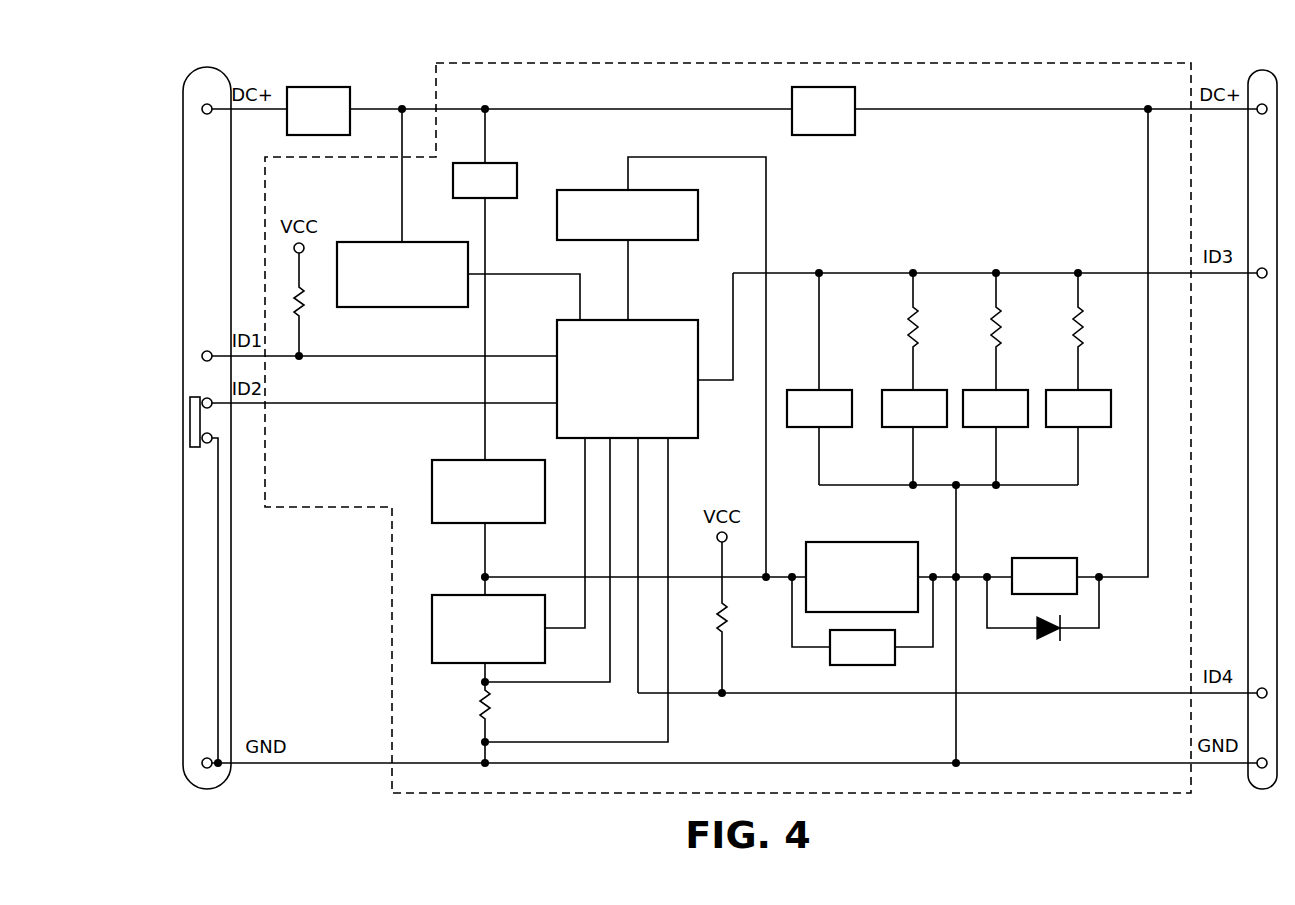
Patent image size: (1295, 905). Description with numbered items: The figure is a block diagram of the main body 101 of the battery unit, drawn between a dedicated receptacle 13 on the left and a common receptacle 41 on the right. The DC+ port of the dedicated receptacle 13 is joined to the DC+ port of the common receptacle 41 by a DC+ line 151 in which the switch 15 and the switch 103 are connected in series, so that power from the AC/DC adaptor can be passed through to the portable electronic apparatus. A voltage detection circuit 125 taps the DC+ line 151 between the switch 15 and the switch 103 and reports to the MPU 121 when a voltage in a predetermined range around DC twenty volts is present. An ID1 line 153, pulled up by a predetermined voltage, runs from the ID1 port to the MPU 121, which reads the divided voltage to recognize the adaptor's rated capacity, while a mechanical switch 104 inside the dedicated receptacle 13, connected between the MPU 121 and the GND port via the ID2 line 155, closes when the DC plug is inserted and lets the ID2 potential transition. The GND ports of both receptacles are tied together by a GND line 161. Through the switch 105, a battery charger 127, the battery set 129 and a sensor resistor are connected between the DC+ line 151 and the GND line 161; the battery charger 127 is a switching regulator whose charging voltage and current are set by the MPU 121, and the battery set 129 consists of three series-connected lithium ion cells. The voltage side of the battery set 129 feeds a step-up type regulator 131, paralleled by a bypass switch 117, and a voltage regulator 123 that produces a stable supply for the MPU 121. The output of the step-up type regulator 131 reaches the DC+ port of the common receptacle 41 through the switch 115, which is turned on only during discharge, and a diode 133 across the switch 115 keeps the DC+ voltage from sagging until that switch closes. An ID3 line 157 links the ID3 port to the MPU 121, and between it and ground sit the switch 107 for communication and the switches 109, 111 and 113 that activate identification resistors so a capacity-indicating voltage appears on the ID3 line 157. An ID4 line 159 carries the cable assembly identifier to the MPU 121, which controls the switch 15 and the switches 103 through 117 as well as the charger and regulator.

The dedicated receptacle 13 is at (214, 68).
The switch 15 is at (314, 87).
The common receptacle 41 is at (1256, 70).
The main body 101 is at (1005, 63).
The switch 103 is at (855, 100).
The mechanical switch 104 is at (190, 410).
The switch 105 is at (517, 178).
The switch for communication 107 is at (830, 390).
The switch for activating identification resistor R1 109 is at (924, 390).
The switch for activating identification resistor R2 111 is at (1006, 390).
The switch for activating identification resistor R3 113 is at (1089, 390).
The switch 115 is at (1043, 558).
The bypass switch 117 is at (896, 661).
The MPU 121 is at (668, 320).
The voltage regulator 123 is at (698, 200).
The voltage detection circuit 125 is at (445, 242).
The battery charger 127 is at (510, 460).
The battery set 129 is at (462, 595).
The step-up type regulator 131 is at (862, 542).
The diode 133 is at (1036, 634).
The DC+ line 151 is at (630, 109).
The ID1 line 153 is at (333, 356).
The ID2 line 155 is at (333, 403).
The ID3 line 157 is at (852, 273).
The ID4 line 159 is at (1118, 693).
The GND line 161 is at (760, 763).